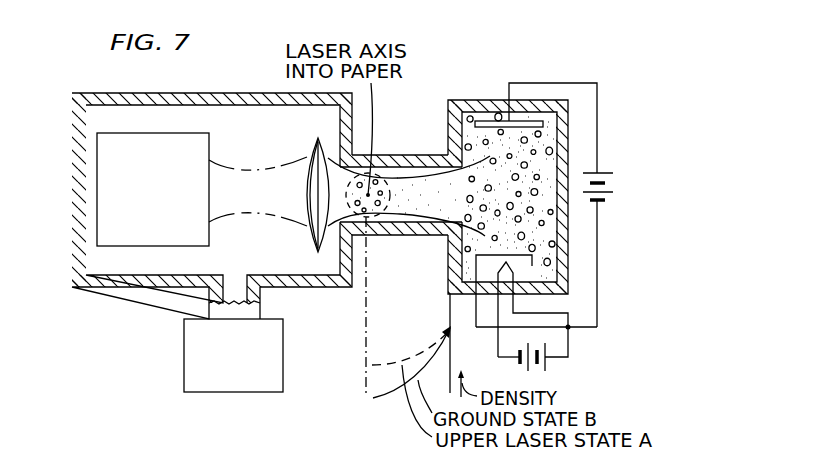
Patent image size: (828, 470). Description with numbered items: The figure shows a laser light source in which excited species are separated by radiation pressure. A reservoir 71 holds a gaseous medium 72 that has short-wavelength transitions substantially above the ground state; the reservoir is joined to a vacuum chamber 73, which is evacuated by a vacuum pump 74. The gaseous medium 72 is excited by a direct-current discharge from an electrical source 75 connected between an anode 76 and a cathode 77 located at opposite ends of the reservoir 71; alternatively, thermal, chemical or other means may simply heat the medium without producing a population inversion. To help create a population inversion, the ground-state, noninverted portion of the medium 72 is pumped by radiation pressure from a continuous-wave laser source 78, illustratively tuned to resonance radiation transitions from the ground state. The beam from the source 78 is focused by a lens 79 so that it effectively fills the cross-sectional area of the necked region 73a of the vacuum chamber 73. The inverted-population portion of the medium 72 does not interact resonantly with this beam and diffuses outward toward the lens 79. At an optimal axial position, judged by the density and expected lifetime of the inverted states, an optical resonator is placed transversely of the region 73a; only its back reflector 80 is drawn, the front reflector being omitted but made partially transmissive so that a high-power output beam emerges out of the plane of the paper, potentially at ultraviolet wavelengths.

The reservoir 71 is at (470, 100).
The gaseous medium 72 is at (530, 162).
The vacuum chamber 73 is at (79, 93).
The necked region 73a is at (400, 155).
The vacuum pump 74 is at (184, 352).
The electrical source 75 is at (615, 183).
The anode 76 is at (528, 121).
The cathode 77 is at (487, 272).
The continuous-wave laser source 78 is at (209, 134).
The lens 79 is at (317, 140).
The back reflector 80 is at (409, 214).